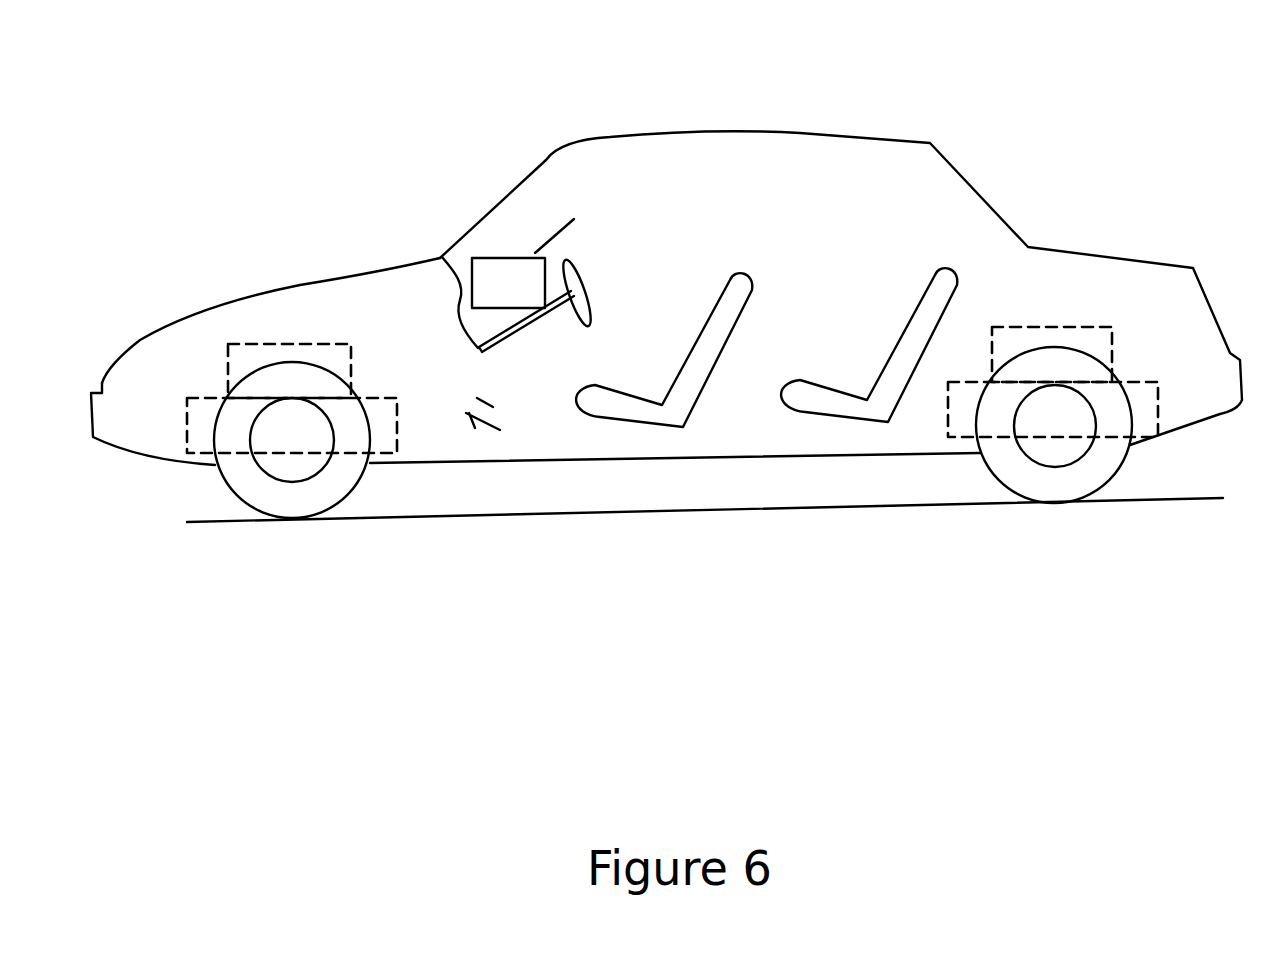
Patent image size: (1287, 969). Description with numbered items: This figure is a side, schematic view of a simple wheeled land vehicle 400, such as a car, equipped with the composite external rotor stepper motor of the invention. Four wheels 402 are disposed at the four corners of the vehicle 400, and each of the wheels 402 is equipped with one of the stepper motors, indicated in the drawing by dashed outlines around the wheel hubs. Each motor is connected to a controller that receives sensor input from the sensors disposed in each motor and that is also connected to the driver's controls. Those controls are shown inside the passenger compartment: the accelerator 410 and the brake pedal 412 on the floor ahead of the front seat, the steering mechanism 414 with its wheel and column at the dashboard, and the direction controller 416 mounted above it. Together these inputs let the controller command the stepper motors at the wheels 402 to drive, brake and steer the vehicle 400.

The wheeled land vehicle 400 is at (1163, 158).
The wheels 402 is at (307, 519).
The accelerator 410 is at (485, 403).
The brake pedal 412 is at (472, 427).
The steering mechanism 414 is at (442, 257).
The direction controller 416 is at (550, 240).